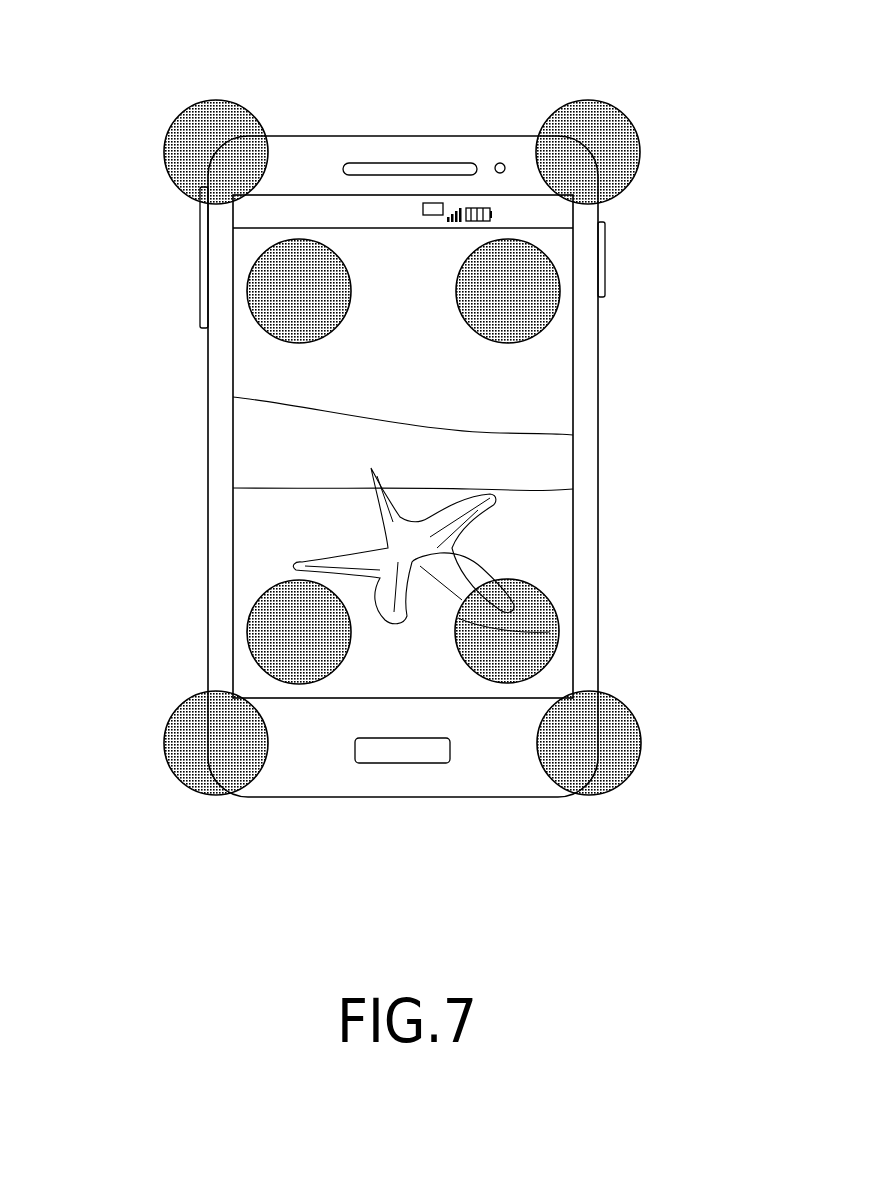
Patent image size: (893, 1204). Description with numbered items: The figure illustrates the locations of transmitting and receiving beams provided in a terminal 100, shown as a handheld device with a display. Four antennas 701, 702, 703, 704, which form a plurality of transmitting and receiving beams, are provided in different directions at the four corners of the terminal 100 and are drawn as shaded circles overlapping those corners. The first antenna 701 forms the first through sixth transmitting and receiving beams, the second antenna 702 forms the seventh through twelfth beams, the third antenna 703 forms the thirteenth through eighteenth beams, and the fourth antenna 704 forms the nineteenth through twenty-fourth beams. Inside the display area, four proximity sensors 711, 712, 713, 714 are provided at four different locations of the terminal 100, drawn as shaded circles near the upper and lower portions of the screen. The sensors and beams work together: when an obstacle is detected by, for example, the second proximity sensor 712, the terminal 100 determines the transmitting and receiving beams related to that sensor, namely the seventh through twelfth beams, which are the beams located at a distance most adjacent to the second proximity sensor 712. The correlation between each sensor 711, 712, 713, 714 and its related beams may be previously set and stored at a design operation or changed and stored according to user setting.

The terminal 100 is at (598, 448).
The first antenna 701 is at (195, 102).
The second antenna 702 is at (608, 103).
The third antenna 703 is at (195, 790).
The fourth antenna 704 is at (610, 790).
The first proximity sensor 711 is at (255, 270).
The second proximity sensor 712 is at (553, 270).
The third proximity sensor 713 is at (253, 610).
The fourth proximity sensor 714 is at (555, 608).